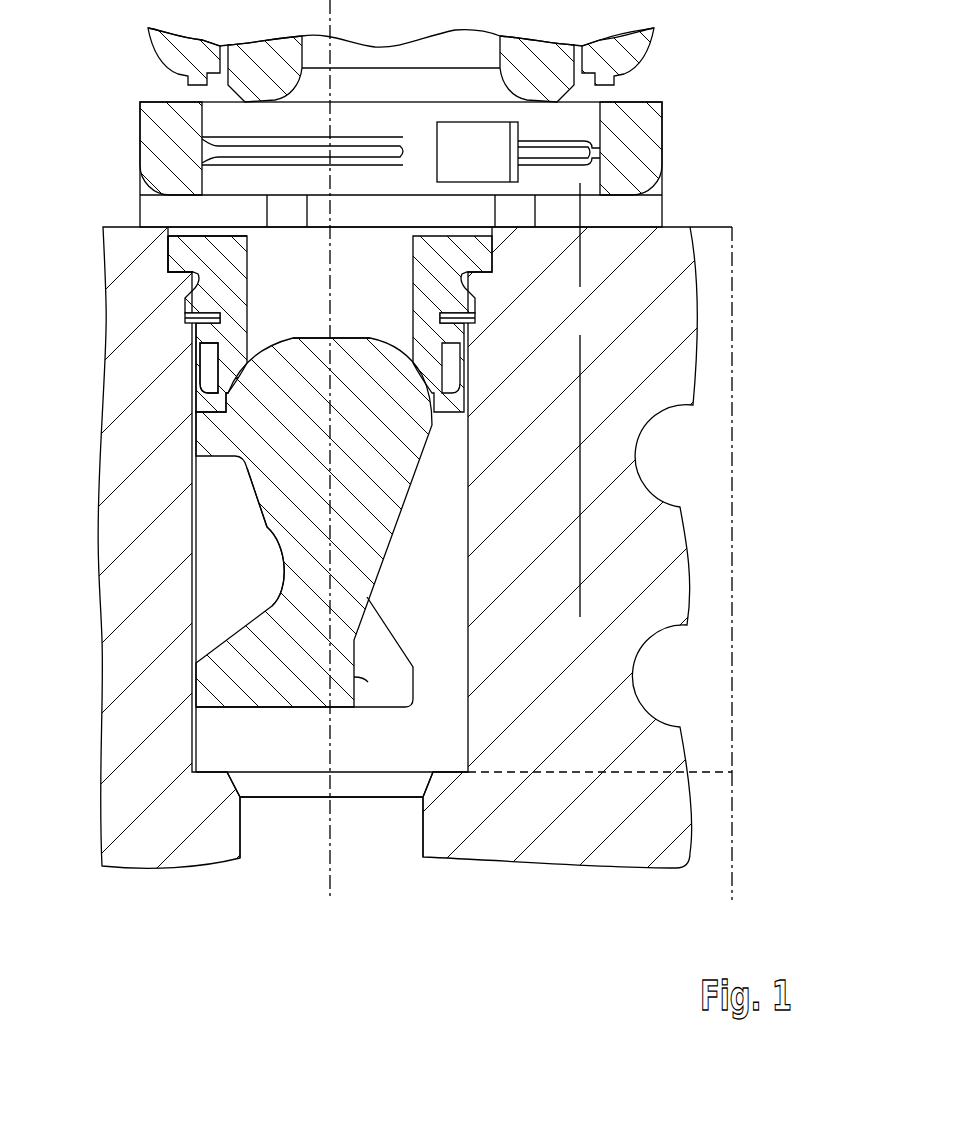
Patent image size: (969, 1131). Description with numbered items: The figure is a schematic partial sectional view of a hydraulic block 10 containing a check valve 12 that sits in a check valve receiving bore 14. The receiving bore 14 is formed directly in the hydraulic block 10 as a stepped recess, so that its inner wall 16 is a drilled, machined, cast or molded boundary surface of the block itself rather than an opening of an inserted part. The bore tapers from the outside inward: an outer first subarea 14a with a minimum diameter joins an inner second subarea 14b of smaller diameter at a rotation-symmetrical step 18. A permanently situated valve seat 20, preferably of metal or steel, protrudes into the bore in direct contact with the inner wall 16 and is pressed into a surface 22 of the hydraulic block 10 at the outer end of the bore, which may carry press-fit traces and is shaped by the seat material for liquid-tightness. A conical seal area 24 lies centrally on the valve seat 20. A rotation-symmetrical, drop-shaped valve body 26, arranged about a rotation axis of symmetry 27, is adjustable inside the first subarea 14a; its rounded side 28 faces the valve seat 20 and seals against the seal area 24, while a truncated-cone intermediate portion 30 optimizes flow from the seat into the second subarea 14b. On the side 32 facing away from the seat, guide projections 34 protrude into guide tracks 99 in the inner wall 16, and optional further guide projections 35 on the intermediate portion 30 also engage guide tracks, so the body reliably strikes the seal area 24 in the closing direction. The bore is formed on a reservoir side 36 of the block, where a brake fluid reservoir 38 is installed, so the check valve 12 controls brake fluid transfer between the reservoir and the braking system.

The hydraulic block 10 is at (122, 384).
The check valve 12 is at (180, 500).
The check valve receiving bore 14 is at (330, 790).
The first subarea 14a is at (732, 487).
The second subarea 14b is at (717, 772).
The inner wall 16 is at (203, 576).
The step 18 is at (207, 772).
The valve seat 20 is at (212, 284).
The surface 22 is at (167, 258).
The seal area 24 is at (405, 378).
The valve body 26 is at (268, 527).
The rotation axis of symmetry 27 is at (332, 887).
The rounded side 28 is at (272, 333).
The intermediate portion 30 is at (252, 548).
The side 32 is at (290, 716).
The guide projections 34 is at (368, 682).
The further guide projections 35 is at (205, 440).
The reservoir side 36 is at (126, 220).
The brake fluid reservoir 38 is at (582, 210).
The guide tracks 99 is at (192, 362).